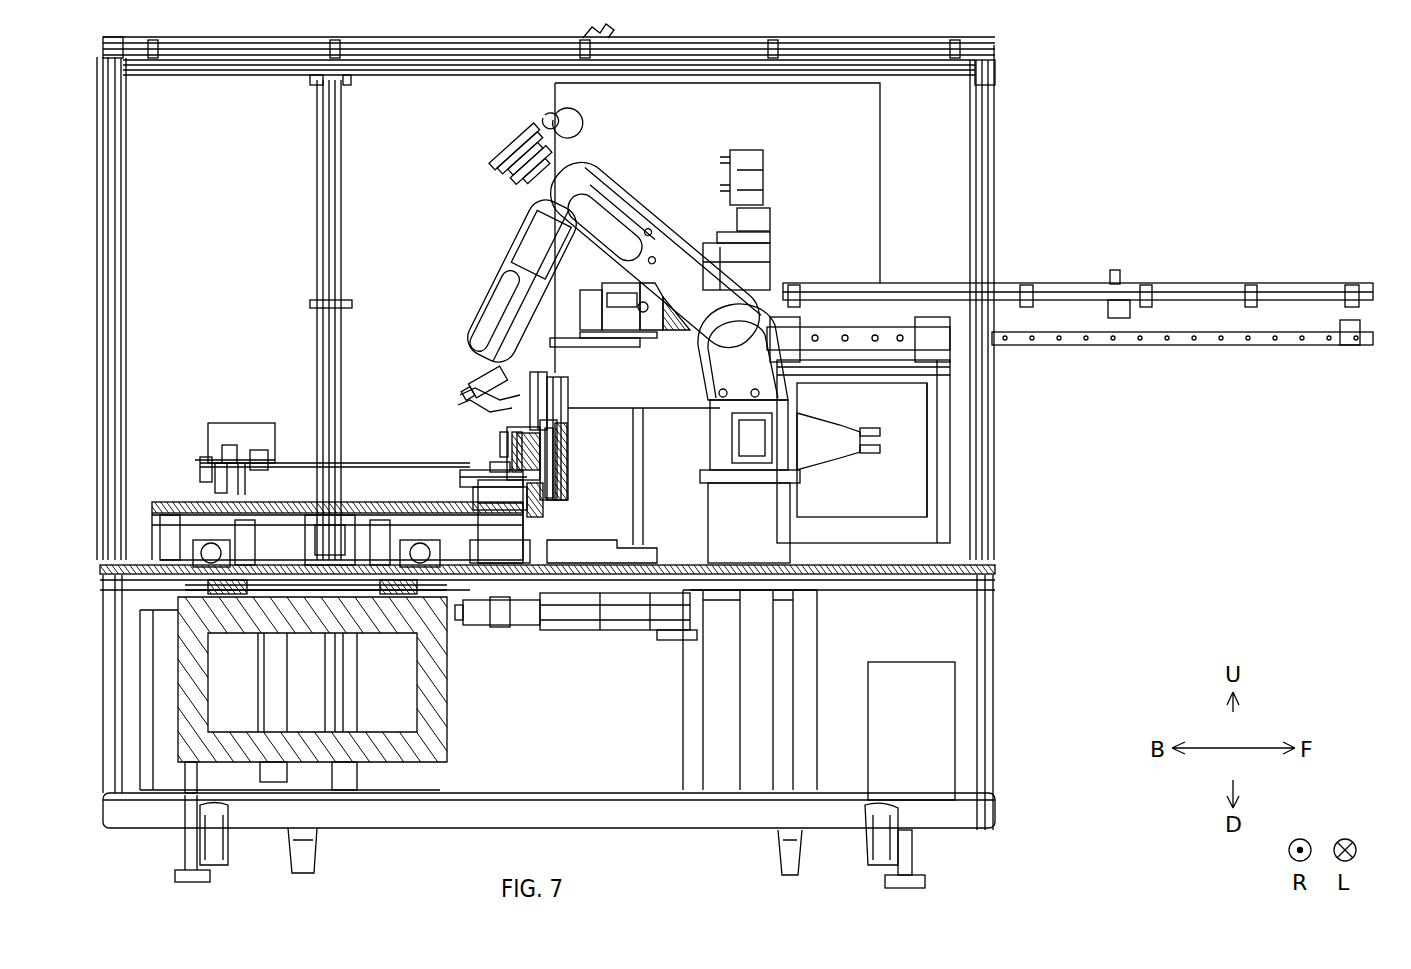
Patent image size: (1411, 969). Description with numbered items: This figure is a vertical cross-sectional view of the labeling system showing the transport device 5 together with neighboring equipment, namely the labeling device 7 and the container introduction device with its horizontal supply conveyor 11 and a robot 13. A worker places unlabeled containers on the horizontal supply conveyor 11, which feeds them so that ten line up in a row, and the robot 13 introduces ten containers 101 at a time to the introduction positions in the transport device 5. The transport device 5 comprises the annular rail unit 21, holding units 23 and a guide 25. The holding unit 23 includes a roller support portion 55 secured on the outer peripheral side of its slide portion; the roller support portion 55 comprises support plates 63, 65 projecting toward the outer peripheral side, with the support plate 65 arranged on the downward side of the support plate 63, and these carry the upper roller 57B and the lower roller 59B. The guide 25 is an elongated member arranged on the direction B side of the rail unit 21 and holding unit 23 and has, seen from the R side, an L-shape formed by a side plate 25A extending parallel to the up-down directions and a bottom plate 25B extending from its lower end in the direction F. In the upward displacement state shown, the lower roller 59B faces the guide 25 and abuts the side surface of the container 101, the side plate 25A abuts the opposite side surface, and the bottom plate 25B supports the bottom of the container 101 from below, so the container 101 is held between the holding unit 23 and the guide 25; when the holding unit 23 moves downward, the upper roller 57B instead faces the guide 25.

The transport device 5 is at (568, 495).
The labeling device 7 is at (207, 432).
The horizontal supply conveyor 11 is at (823, 315).
The robot 13 is at (638, 205).
The rail unit 21 is at (573, 503).
The holding unit 23 is at (543, 362).
The guide 25 is at (507, 440).
The side plate 25A is at (507, 448).
The bottom plate 25B is at (500, 463).
The roller support portion 55 is at (535, 368).
The upper roller 57B is at (548, 393).
The lower roller 59B is at (560, 450).
The support plate 63 is at (520, 372).
The support plate 65 is at (547, 425).
The container 101 is at (562, 472).